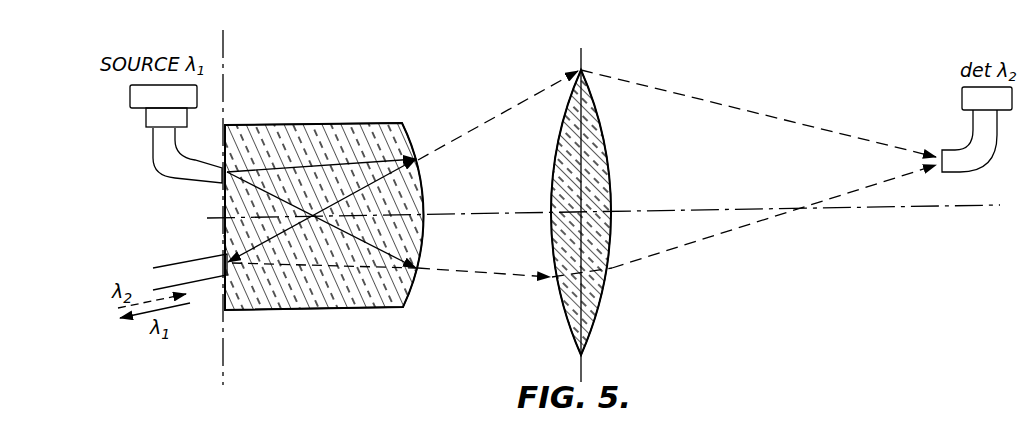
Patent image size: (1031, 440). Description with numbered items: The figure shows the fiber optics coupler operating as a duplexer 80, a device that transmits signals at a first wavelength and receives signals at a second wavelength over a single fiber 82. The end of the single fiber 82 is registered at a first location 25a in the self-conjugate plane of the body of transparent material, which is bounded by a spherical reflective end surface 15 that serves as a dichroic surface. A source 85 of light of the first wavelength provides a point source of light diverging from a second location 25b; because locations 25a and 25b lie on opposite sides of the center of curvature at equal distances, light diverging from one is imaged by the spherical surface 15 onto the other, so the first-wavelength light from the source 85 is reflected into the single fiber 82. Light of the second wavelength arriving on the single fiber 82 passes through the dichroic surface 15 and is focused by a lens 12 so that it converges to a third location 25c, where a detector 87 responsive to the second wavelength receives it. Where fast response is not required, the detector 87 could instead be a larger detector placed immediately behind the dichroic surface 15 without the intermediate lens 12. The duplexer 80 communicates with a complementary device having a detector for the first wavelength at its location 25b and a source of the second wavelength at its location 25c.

The spherical reflective end surface 15 is at (405, 130).
The lens 12 is at (600, 322).
The duplexer 80 is at (452, 330).
The source 85 is at (128, 93).
The detector 87 is at (962, 100).
The first location 25a is at (228, 240).
The second location 25b is at (225, 191).
The location 25c is at (940, 157).
The single fiber 82 is at (191, 258).